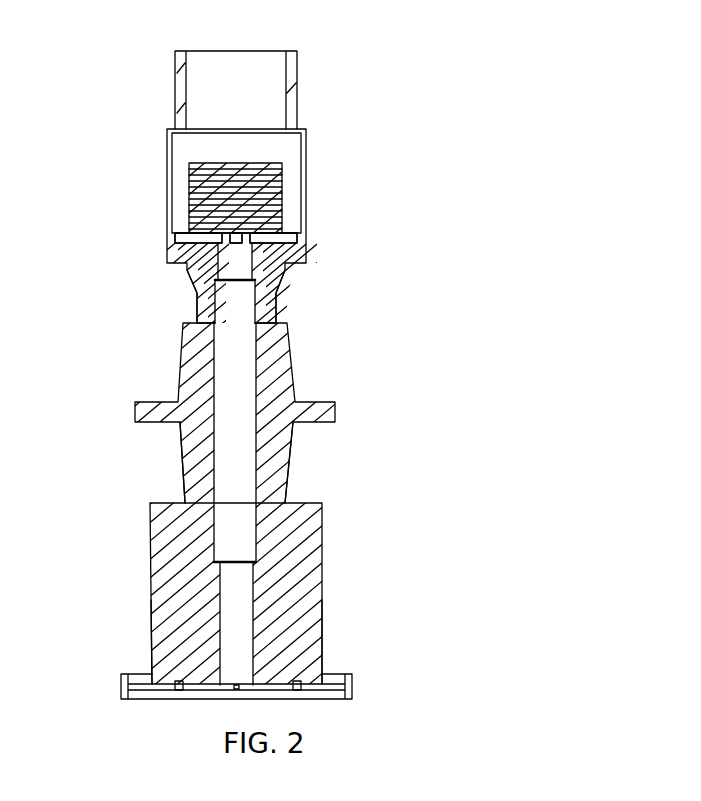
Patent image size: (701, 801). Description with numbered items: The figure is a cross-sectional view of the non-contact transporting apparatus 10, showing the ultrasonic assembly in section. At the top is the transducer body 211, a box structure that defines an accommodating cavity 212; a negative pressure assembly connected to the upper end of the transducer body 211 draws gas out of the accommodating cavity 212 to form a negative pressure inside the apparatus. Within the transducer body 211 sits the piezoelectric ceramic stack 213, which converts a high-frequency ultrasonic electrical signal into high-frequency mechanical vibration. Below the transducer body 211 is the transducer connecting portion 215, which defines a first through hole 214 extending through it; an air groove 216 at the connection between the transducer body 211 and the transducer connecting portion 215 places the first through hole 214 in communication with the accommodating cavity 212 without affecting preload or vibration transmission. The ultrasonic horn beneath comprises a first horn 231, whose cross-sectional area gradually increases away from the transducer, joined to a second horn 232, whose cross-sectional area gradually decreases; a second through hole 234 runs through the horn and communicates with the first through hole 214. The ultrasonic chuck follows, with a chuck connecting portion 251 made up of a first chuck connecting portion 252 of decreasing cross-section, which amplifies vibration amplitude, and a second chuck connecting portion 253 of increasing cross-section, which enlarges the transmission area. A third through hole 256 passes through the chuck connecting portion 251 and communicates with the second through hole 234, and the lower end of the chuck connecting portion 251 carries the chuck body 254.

The non-contact transporting apparatus 10 is at (147, 50).
The transducer body 211 is at (305, 148).
The accommodating cavity 212 is at (213, 157).
The piezoelectric ceramic stack 213 is at (260, 208).
The first through hole 214 is at (235, 272).
The transducer connecting portion 215 is at (276, 283).
The air groove 216 is at (202, 238).
The first horn 231 is at (265, 373).
The second horn 232 is at (265, 458).
The second through hole 234 is at (237, 445).
The chuck connecting portion 251 is at (413, 527).
The first chuck connecting portion 252 is at (273, 542).
The second chuck connecting portion 253 is at (273, 625).
The chuck body 254 is at (348, 675).
The third through hole 256 is at (230, 593).